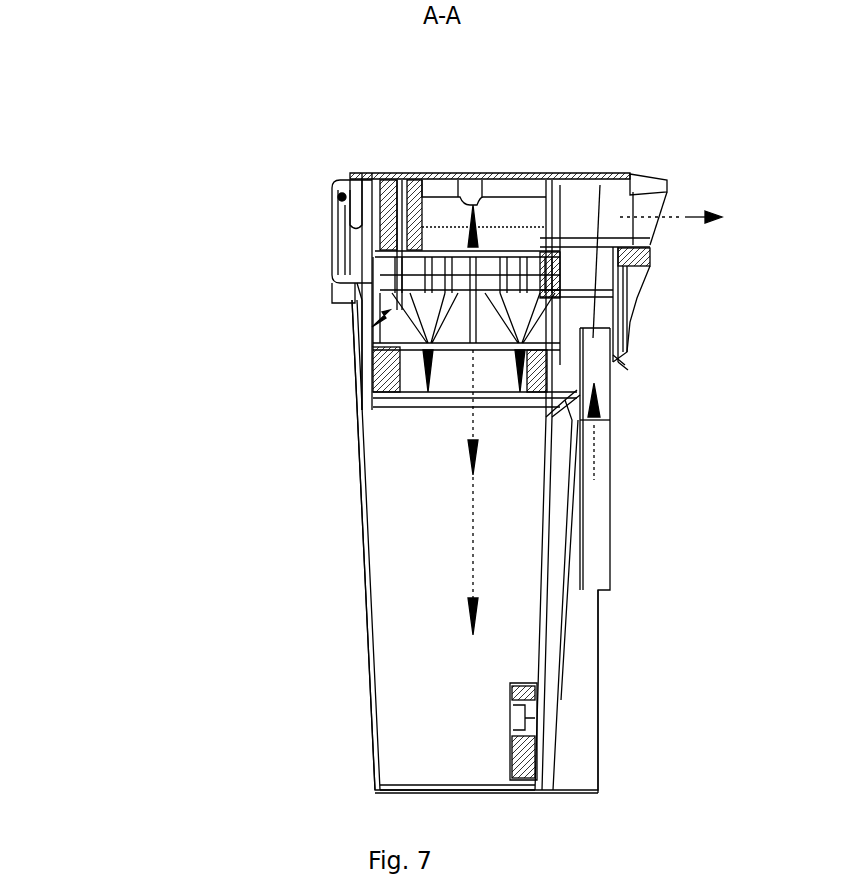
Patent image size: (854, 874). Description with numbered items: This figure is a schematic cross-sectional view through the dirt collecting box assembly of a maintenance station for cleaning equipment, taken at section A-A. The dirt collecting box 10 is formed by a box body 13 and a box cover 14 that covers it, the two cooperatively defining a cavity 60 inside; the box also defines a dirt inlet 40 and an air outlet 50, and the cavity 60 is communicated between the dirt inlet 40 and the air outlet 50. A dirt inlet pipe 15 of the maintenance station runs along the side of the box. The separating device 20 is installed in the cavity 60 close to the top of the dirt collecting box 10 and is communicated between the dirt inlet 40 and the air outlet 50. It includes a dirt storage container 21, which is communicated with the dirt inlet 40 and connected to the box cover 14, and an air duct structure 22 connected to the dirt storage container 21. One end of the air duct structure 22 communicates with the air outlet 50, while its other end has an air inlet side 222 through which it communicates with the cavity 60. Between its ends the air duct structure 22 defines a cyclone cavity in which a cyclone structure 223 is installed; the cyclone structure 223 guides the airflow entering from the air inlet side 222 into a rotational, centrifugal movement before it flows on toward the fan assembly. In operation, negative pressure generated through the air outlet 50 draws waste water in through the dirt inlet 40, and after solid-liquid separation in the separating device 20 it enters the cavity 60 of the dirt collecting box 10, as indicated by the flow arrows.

The dirt collecting box 10 is at (112, 225).
The box body 13 is at (358, 478).
The box cover 14 is at (328, 207).
The dirt inlet pipe 15 is at (607, 530).
The separating device 20 is at (239, 243).
The dirt storage container 21 is at (356, 376).
The air duct structure 22 is at (327, 233).
The air inlet side 222 is at (356, 300).
The cyclone structure 223 is at (427, 210).
The dirt inlet 40 is at (583, 197).
The air outlet 50 is at (655, 212).
The cavity 60 is at (393, 585).